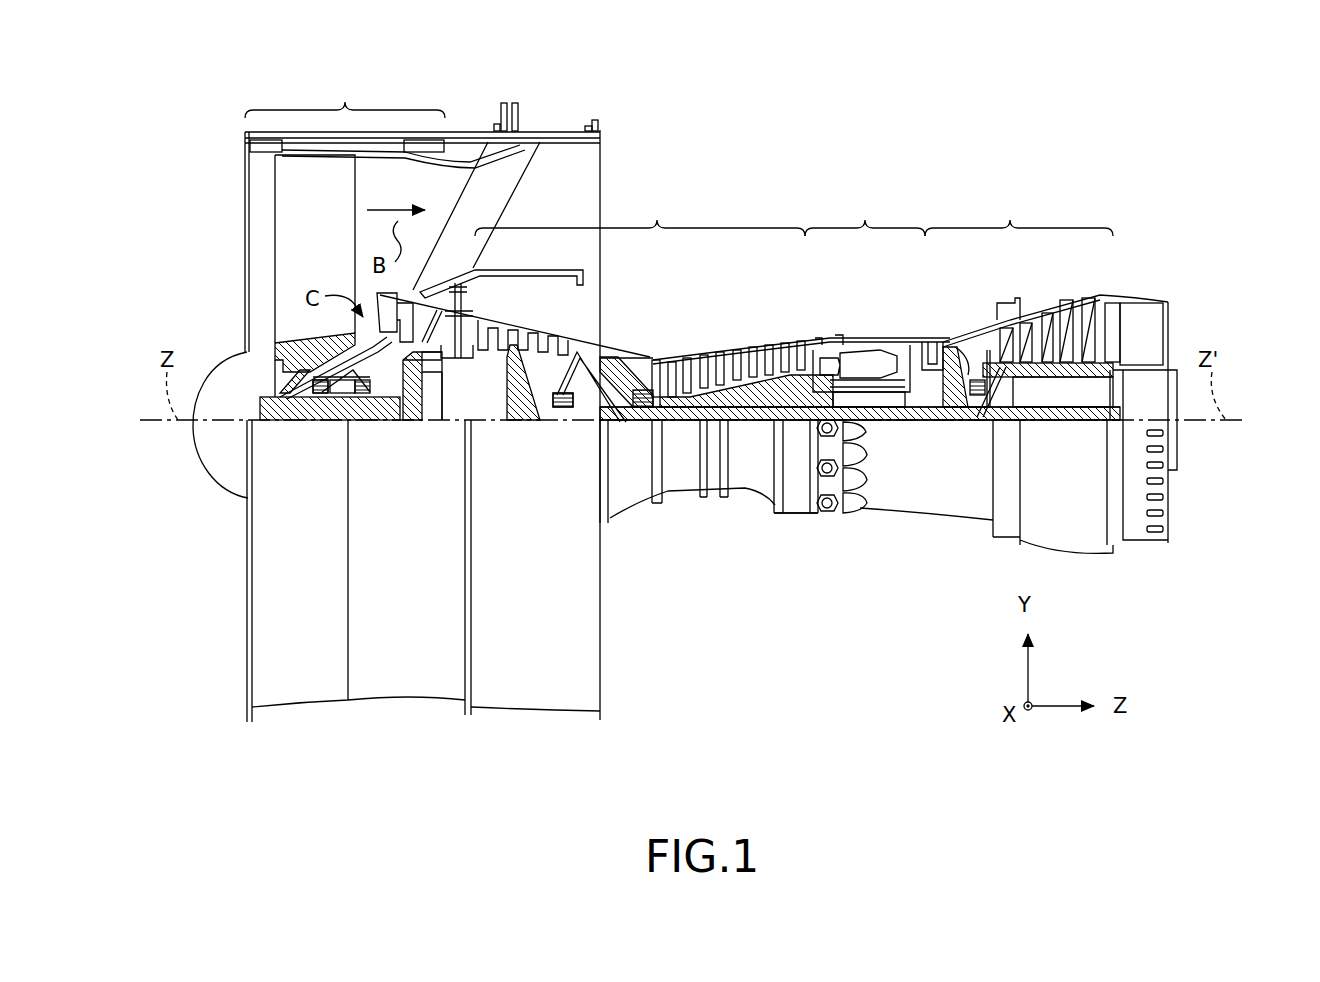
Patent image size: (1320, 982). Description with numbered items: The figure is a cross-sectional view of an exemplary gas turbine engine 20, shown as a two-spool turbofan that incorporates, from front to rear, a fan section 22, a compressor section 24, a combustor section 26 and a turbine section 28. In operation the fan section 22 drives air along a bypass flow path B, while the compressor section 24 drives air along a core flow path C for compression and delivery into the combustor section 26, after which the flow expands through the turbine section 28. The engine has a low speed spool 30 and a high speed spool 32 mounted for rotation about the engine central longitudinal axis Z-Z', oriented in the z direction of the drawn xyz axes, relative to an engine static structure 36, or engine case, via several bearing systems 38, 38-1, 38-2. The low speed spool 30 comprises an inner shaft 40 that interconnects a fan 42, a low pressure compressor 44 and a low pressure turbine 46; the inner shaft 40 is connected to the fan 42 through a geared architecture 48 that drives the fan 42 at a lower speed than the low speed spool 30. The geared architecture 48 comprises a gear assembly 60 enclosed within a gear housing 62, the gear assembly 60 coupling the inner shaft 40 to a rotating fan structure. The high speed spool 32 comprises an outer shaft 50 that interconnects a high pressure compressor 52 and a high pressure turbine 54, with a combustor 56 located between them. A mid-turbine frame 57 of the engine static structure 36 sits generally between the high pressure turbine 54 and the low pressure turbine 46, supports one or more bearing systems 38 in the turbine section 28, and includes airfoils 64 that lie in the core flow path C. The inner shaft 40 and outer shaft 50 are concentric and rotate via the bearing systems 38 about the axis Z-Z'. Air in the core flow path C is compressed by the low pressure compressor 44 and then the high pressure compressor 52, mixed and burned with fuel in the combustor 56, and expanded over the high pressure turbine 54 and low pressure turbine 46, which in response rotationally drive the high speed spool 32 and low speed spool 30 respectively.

The gas turbine engine 20 is at (924, 120).
The fan section 22 is at (345, 96).
The compressor section 24 is at (640, 213).
The combustor section 26 is at (865, 213).
The turbine section 28 is at (1019, 213).
The low speed spool 30 is at (758, 437).
The high speed spool 32 is at (803, 380).
The engine static structure 36 is at (213, 742).
The bearing system 38 is at (975, 392).
The bearing system 38-1 is at (325, 420).
The bearing system 38-2 is at (557, 420).
The inner shaft 40 is at (620, 422).
The fan 42 is at (318, 263).
The low pressure compressor 44 is at (540, 322).
The low pressure turbine 46 is at (1042, 295).
The geared architecture 48 is at (422, 455).
The outer shaft 50 is at (838, 398).
The high pressure compressor 52 is at (747, 360).
The high pressure turbine 54 is at (937, 345).
The combustor 56 is at (868, 357).
The mid-turbine frame 57 is at (973, 345).
The gear assembly 60 is at (442, 388).
The gear housing 62 is at (442, 367).
The airfoils 64 is at (978, 345).